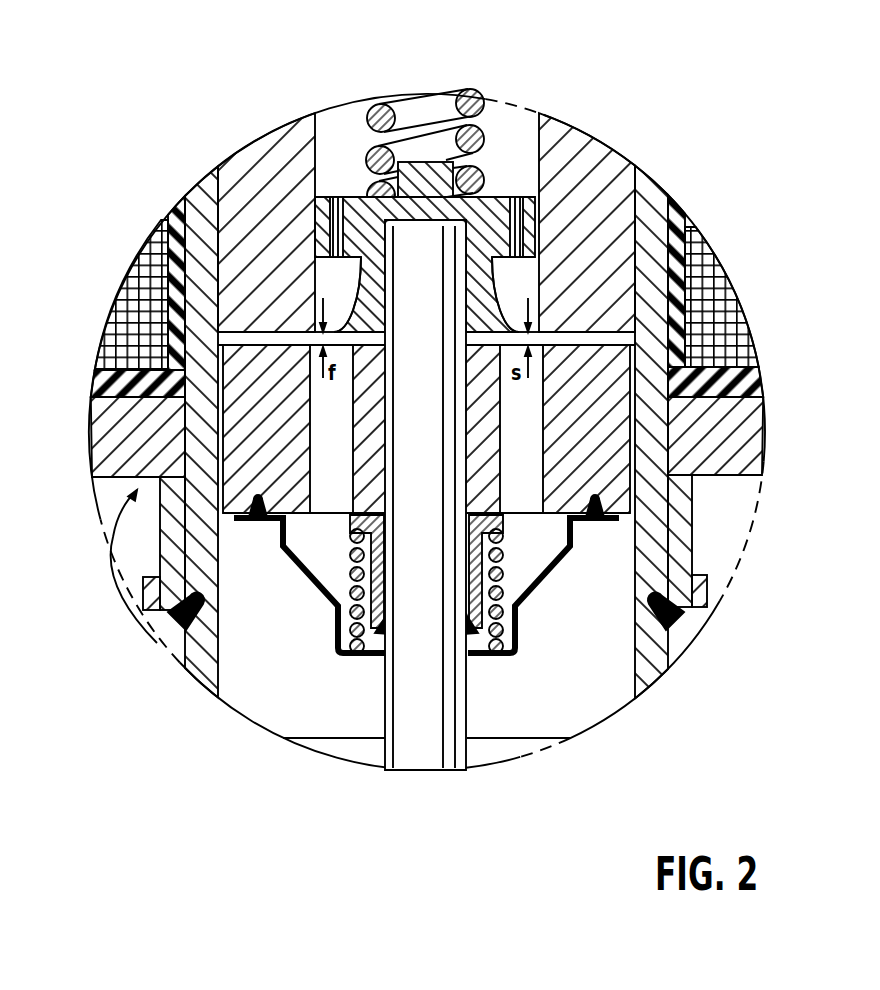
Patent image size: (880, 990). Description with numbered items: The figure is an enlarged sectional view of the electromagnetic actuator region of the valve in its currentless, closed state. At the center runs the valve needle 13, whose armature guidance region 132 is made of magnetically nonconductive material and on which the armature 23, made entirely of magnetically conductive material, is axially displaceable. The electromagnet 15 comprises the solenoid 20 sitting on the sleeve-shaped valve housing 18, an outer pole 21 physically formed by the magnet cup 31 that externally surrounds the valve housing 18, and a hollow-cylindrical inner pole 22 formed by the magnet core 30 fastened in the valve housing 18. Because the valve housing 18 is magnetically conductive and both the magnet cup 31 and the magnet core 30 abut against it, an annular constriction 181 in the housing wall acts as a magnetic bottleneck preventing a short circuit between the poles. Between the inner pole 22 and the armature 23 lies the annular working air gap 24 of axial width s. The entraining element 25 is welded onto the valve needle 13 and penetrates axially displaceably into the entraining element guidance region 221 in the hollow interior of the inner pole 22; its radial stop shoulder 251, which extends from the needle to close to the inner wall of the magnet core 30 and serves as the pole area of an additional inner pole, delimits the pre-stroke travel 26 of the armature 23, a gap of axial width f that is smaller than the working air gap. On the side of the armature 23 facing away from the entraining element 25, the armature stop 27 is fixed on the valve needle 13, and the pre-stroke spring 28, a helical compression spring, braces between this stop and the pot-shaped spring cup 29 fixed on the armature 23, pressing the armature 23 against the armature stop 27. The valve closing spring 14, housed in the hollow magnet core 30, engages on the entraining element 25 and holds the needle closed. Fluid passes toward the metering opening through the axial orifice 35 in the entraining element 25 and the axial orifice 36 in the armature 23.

The valve needle 13 is at (420, 752).
The armature guidance region 132 is at (463, 437).
The valve closing spring 14 is at (471, 91).
The electromagnet 15 is at (112, 562).
The valve housing 18 is at (647, 217).
The annular constriction 181 is at (188, 338).
The solenoid 20 is at (703, 284).
The outer pole 21 is at (764, 413).
The inner pole 22 is at (587, 132).
The entraining element guidance region 221 is at (313, 257).
The armature 23 is at (607, 472).
The working air gap 24 is at (590, 337).
The entraining element 25 is at (350, 197).
The radial stop shoulder 251 is at (356, 320).
The pre-stroke travel 26 is at (362, 348).
The armature stop 27 is at (507, 527).
The pre-stroke spring 28 is at (342, 614).
The spring cup 29 is at (325, 548).
The magnet core 30 is at (603, 190).
The magnet cup 31 is at (717, 448).
The axial orifice 35 is at (333, 197).
The axial orifice 36 is at (322, 518).